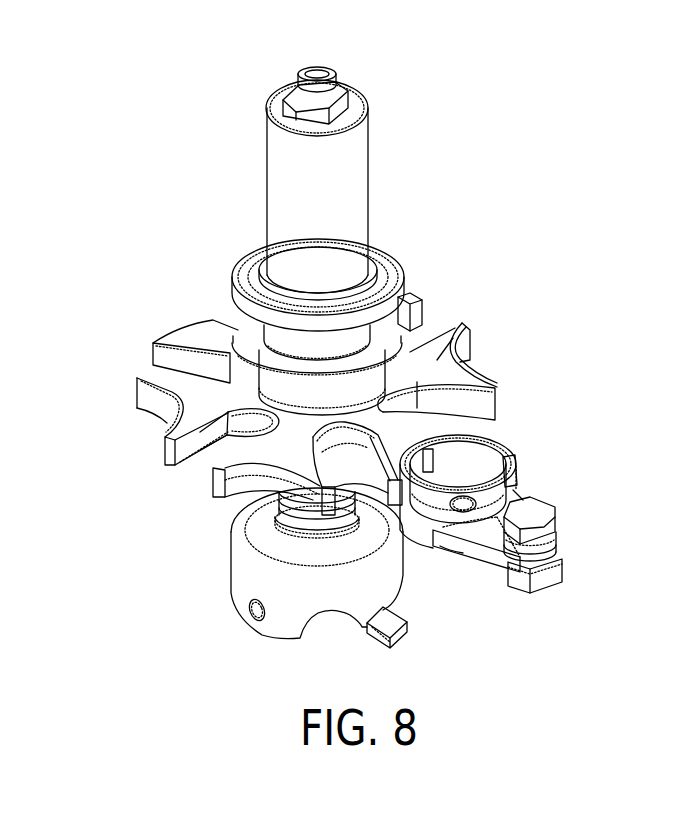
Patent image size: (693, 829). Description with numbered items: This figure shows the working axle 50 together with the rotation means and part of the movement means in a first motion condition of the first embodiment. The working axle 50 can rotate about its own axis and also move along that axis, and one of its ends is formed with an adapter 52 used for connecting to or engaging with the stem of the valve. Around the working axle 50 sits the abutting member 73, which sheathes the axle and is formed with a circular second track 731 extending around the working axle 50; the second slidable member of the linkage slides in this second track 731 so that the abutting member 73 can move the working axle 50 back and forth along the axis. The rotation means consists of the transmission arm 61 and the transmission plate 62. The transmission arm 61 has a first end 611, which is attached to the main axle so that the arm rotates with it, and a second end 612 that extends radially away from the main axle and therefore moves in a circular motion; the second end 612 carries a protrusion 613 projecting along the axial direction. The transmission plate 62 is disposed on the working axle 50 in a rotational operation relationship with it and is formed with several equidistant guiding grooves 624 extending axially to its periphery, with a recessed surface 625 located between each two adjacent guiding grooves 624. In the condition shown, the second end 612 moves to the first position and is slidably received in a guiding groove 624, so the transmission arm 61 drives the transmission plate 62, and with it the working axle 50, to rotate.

The abutting member 73 is at (330, 160).
The second track 731 is at (388, 322).
The transmission plate 62 is at (433, 360).
The recessed surfaces 625 is at (458, 365).
The guiding grooves 624 is at (453, 407).
The transmission arm 61 is at (529, 531).
The first end 611 is at (465, 473).
The protrusion 613 is at (537, 515).
The second end 612 is at (548, 562).
The working axle 50 is at (280, 512).
The adapter 52 is at (258, 572).